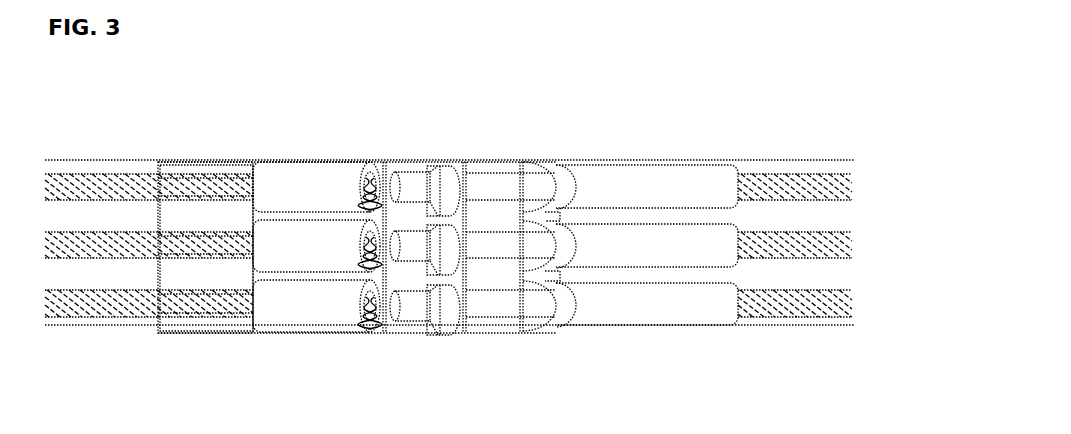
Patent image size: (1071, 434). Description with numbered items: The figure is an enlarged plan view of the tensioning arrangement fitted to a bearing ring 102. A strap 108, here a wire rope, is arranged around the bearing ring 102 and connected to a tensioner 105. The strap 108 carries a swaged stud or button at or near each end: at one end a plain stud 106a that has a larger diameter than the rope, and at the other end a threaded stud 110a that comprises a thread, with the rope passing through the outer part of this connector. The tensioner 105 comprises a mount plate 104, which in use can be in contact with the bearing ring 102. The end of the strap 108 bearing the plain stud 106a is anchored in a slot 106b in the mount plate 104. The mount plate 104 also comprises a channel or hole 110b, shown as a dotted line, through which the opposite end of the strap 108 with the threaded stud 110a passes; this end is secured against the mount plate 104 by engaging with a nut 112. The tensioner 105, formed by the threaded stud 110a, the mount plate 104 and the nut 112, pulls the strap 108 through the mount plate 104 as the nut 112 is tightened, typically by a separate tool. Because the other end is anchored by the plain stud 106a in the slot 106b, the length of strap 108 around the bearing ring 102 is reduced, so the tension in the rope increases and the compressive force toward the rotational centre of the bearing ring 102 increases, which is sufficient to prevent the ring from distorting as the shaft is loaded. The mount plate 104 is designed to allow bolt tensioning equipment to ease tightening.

The bearing ring 102 is at (60, 146).
The mount plate 104 is at (162, 342).
The tensioner 105 is at (512, 267).
The plain stud 106a is at (310, 173).
The slot 106b is at (189, 160).
The strap 108 is at (111, 172).
The threaded stud 110a is at (640, 182).
The channel 110b is at (498, 172).
The nut 112 is at (437, 161).